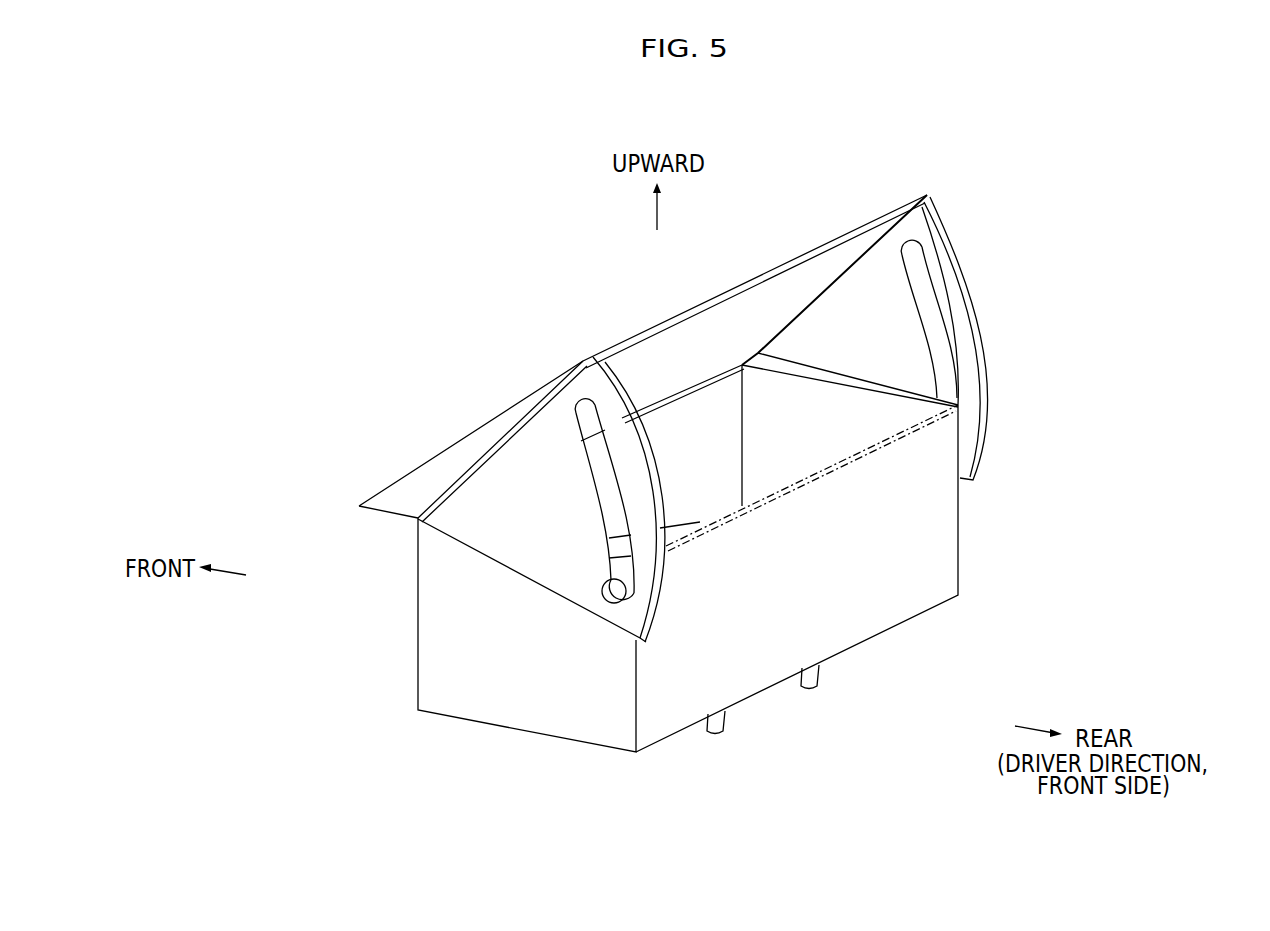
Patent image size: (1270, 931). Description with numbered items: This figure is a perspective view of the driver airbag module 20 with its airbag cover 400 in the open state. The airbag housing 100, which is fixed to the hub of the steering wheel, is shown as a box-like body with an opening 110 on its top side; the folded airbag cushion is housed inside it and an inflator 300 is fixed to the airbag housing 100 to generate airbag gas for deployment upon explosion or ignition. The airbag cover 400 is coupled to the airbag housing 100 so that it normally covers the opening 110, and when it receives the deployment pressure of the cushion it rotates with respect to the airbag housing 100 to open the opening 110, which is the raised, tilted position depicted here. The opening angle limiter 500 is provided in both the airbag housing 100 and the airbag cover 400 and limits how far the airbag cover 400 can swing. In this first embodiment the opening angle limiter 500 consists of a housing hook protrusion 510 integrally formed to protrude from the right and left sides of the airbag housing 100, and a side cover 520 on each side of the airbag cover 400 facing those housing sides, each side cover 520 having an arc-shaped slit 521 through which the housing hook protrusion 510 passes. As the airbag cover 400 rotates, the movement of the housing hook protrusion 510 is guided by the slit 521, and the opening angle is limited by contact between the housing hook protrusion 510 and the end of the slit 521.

The airbag module 20 is at (598, 337).
The airbag housing 100 is at (852, 617).
The opening 110 is at (757, 467).
The inflator 300 is at (678, 530).
The airbag cover 400 is at (775, 267).
The opening angle limiter 500 is at (538, 596).
The housing hook protrusion 510 is at (610, 600).
The side cover 520 is at (527, 470).
The slit 521 is at (598, 484).